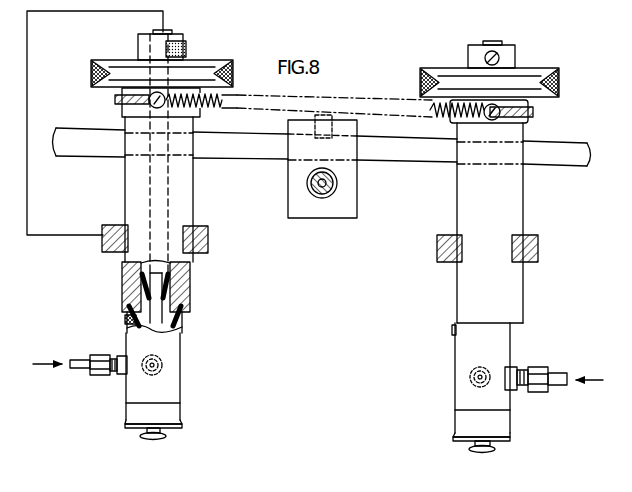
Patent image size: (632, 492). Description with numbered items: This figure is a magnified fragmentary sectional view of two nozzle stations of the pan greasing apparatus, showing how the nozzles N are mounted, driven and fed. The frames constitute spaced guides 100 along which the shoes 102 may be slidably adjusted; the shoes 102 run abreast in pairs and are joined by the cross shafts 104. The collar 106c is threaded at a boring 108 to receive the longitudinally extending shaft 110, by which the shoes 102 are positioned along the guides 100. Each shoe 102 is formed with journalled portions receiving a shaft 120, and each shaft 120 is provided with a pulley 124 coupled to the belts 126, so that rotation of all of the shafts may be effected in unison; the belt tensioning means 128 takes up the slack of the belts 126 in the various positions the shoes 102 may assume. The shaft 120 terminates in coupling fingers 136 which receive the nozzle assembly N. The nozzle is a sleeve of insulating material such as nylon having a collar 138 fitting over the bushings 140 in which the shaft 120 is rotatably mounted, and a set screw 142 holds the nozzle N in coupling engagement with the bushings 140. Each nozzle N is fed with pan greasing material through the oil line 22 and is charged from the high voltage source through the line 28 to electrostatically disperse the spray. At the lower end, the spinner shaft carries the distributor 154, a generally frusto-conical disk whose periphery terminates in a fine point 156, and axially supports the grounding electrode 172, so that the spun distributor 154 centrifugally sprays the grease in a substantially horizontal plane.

The shaft 120 is at (168, 31).
The pulley 124 is at (124, 60).
The belt 126 is at (93, 72).
The belt tensioning means 128 is at (115, 99).
The shoe 102 is at (130, 177).
The guide 100 is at (110, 230).
The cross shaft 104 is at (403, 150).
The collar 106c is at (296, 166).
The boring 108 is at (308, 190).
The longitudinally extending shaft 110 is at (321, 193).
The coupling finger 136 is at (154, 300).
The bushing 140 is at (190, 285).
The set screw 142 is at (126, 315).
The collar 138 is at (184, 318).
The oil line 22 is at (80, 358).
The line 28 is at (164, 365).
The fine point 156 is at (180, 425).
The distributor 154 is at (166, 428).
The grounding electrode 172 is at (150, 439).
The nozzle N is at (104, 398).